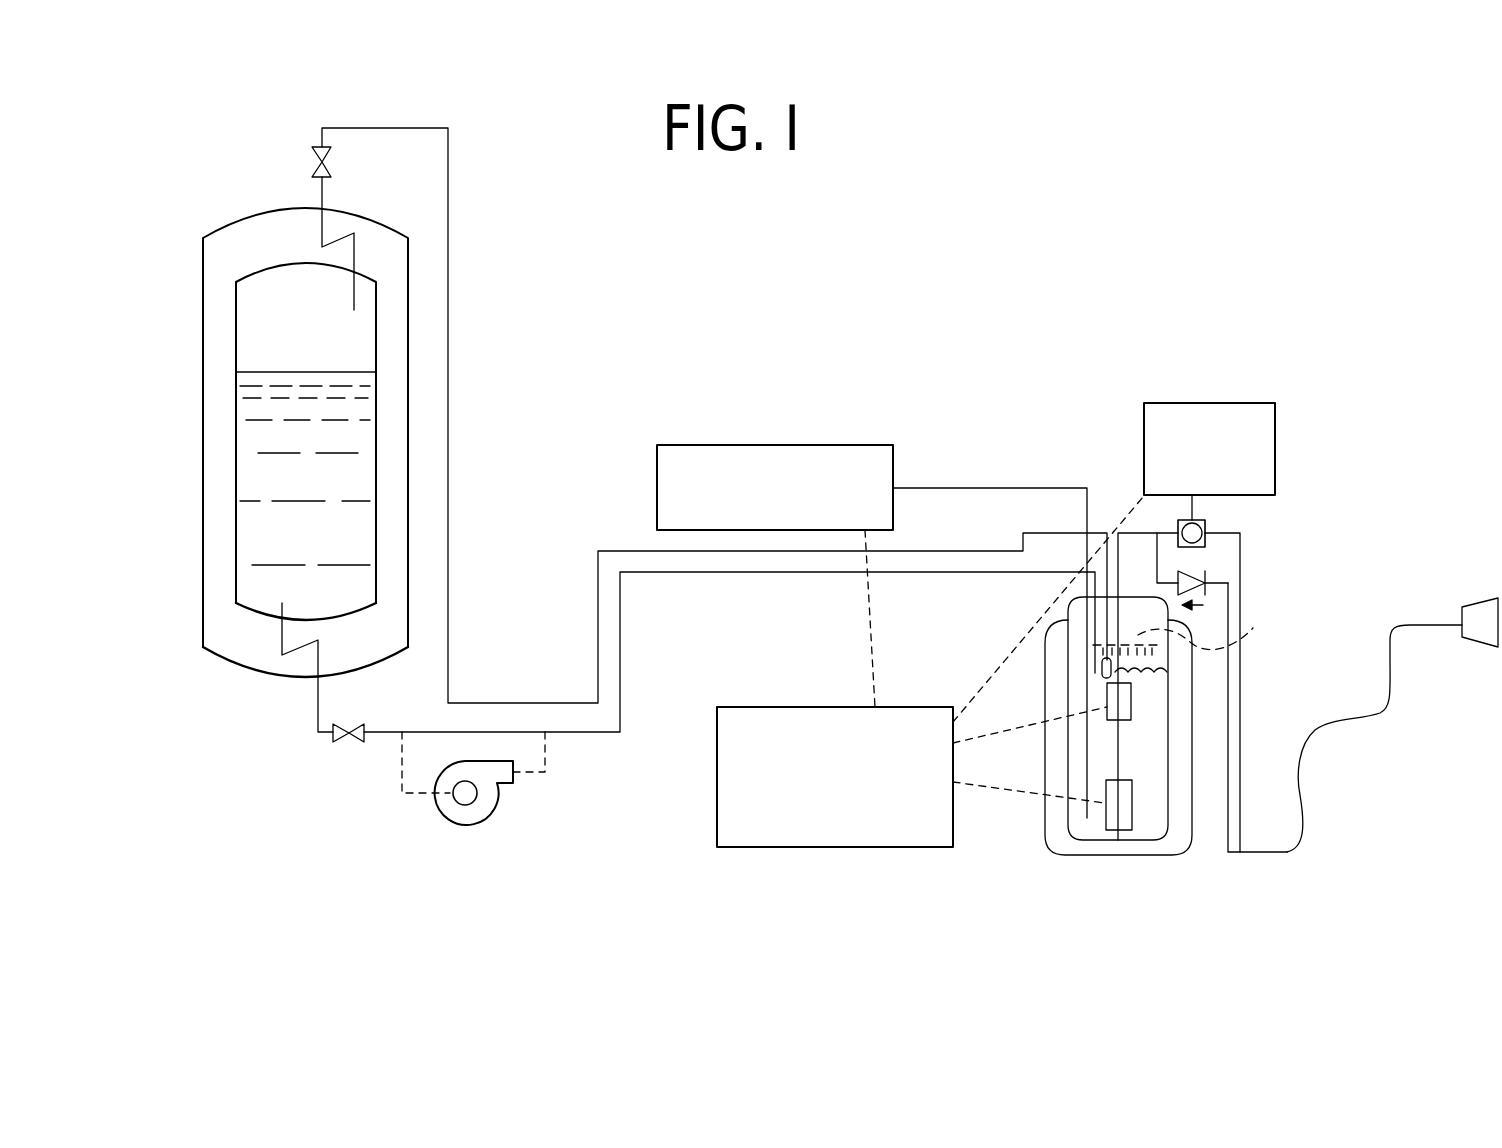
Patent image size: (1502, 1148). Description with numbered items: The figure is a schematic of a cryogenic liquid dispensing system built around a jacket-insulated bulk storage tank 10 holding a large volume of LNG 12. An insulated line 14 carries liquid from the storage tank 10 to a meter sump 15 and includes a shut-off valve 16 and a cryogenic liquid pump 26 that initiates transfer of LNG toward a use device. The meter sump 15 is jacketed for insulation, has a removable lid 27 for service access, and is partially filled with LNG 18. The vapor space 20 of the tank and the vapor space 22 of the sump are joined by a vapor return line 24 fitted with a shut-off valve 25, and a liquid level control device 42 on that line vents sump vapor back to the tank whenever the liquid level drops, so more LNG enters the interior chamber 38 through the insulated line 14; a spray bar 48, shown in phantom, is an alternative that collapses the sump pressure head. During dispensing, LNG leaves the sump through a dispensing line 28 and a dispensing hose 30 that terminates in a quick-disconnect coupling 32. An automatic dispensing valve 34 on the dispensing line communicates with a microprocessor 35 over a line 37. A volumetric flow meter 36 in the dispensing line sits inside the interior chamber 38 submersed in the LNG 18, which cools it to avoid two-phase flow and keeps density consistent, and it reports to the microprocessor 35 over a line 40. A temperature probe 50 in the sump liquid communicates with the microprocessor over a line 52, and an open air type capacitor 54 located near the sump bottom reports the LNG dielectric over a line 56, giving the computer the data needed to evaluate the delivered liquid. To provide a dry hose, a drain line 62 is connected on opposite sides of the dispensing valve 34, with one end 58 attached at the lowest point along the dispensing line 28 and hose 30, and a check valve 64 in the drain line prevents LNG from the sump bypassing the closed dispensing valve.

The bulk storage tank 10 is at (203, 325).
The LNG 12 is at (270, 460).
The insulated line 14 is at (318, 709).
The meter sump 15 is at (1047, 822).
The shut-off valve 16 is at (349, 742).
The LNG 18 is at (1143, 807).
The vapor space 20 is at (310, 333).
The vapor space 22 is at (1132, 608).
The vapor return line 24 is at (448, 240).
The shut-off valve 25 is at (318, 160).
The cryogenic liquid pump 26 is at (497, 817).
The removable lid 27 is at (1140, 600).
The dispensing line 28 is at (1240, 830).
The dispensing hose 30 is at (1300, 788).
The quick-disconnect coupling 32 is at (1483, 597).
The automatic dispensing valve 34 is at (1205, 528).
The microprocessor 35 is at (717, 776).
The volumetric flow meter 36 is at (1107, 688).
The line 37 is at (998, 670).
The interior chamber 38 is at (1087, 855).
The line 40 is at (983, 740).
The liquid level control device 42 is at (1103, 662).
The spray bar 48 is at (1190, 634).
The temperature probe 50 is at (1087, 760).
The line 52 is at (875, 652).
The open air type capacitor 54 is at (1123, 830).
The line 56 is at (1060, 800).
The end of drain line 58 is at (1233, 855).
The drain line 62 is at (1223, 783).
The check valve 64 is at (1208, 587).